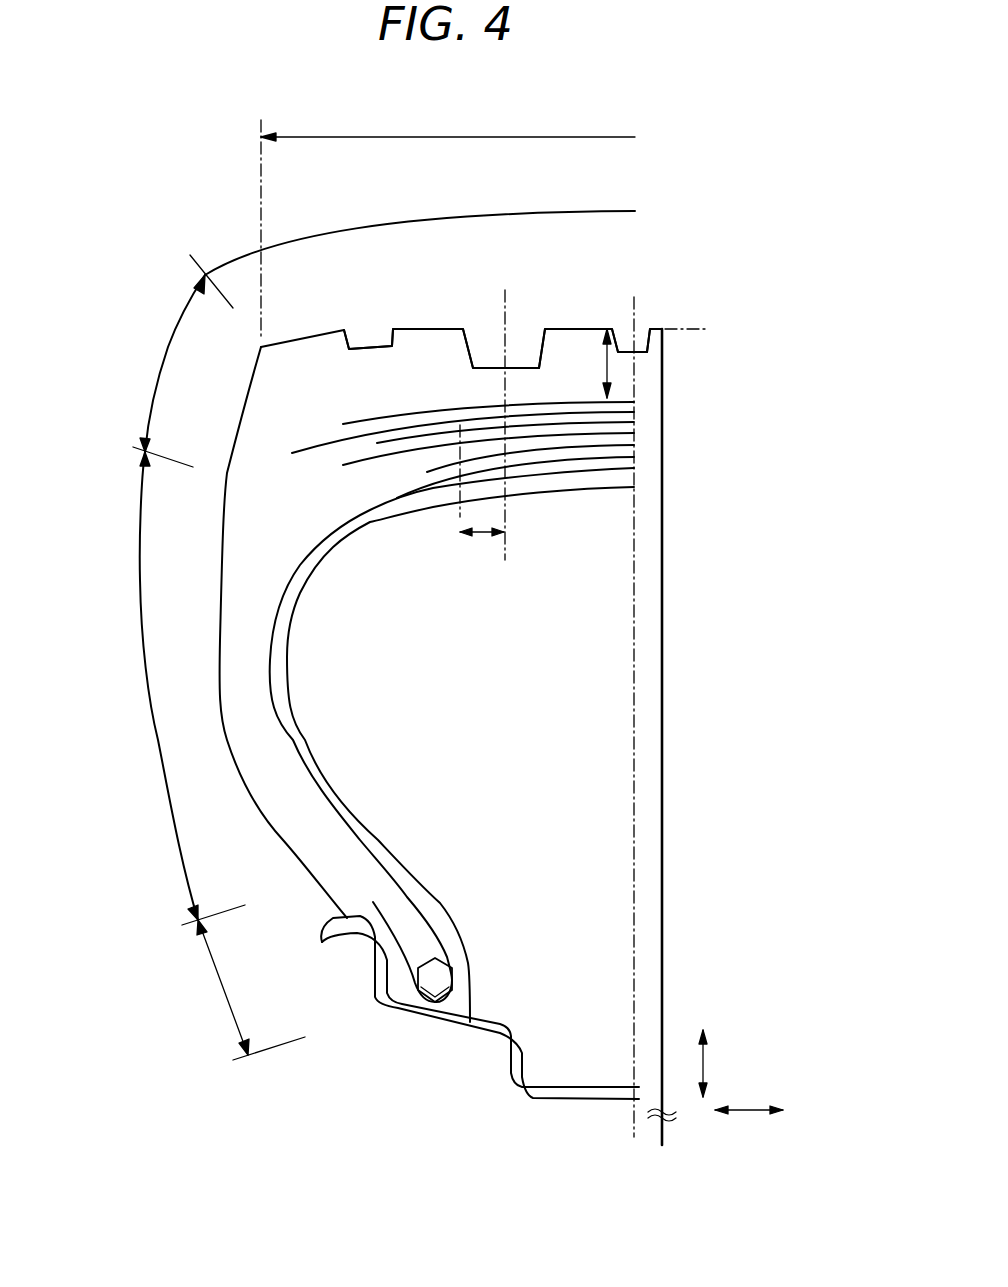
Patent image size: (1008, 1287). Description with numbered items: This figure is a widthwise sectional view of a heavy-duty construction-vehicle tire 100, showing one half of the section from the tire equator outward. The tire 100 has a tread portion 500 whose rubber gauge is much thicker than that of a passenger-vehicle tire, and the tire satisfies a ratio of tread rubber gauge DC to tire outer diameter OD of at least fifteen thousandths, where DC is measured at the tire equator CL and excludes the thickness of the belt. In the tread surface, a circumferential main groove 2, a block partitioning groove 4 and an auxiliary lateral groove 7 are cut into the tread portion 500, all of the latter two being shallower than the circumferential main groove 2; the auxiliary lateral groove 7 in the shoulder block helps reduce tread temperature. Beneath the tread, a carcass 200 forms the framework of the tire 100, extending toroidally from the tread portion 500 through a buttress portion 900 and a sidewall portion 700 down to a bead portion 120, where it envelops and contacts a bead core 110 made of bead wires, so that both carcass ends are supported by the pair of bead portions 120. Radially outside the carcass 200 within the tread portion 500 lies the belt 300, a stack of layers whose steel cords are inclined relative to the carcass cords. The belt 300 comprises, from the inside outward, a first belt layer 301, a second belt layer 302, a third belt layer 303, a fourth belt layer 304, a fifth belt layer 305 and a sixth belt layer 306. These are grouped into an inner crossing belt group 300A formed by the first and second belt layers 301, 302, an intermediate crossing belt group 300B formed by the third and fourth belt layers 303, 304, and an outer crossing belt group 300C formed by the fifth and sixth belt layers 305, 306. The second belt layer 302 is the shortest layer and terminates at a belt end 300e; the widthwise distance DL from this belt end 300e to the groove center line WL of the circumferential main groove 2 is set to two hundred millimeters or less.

The tire 100 is at (725, 285).
The tread portion 500 is at (393, 218).
The buttress portion 900 is at (167, 358).
The sidewall portion 700 is at (140, 590).
The bead portion 120 is at (217, 982).
The carcass 200 is at (338, 827).
The bead core 110 is at (440, 982).
The auxiliary lateral groove 7 is at (368, 327).
The circumferential main groove 2 is at (513, 323).
The block partitioning groove 4 is at (642, 325).
The belt 300 is at (566, 431).
The inner crossing belt group 300A is at (590, 476).
The intermediate crossing belt group 300B is at (563, 437).
The outer crossing belt group 300C is at (538, 404).
The first belt layer 301 is at (634, 457).
The second belt layer 302 is at (634, 445).
The third belt layer 303 is at (634, 433).
The fourth belt layer 304 is at (634, 422).
The fifth belt layer 305 is at (634, 412).
The sixth belt layer 306 is at (634, 402).
The belt end 300e is at (460, 455).